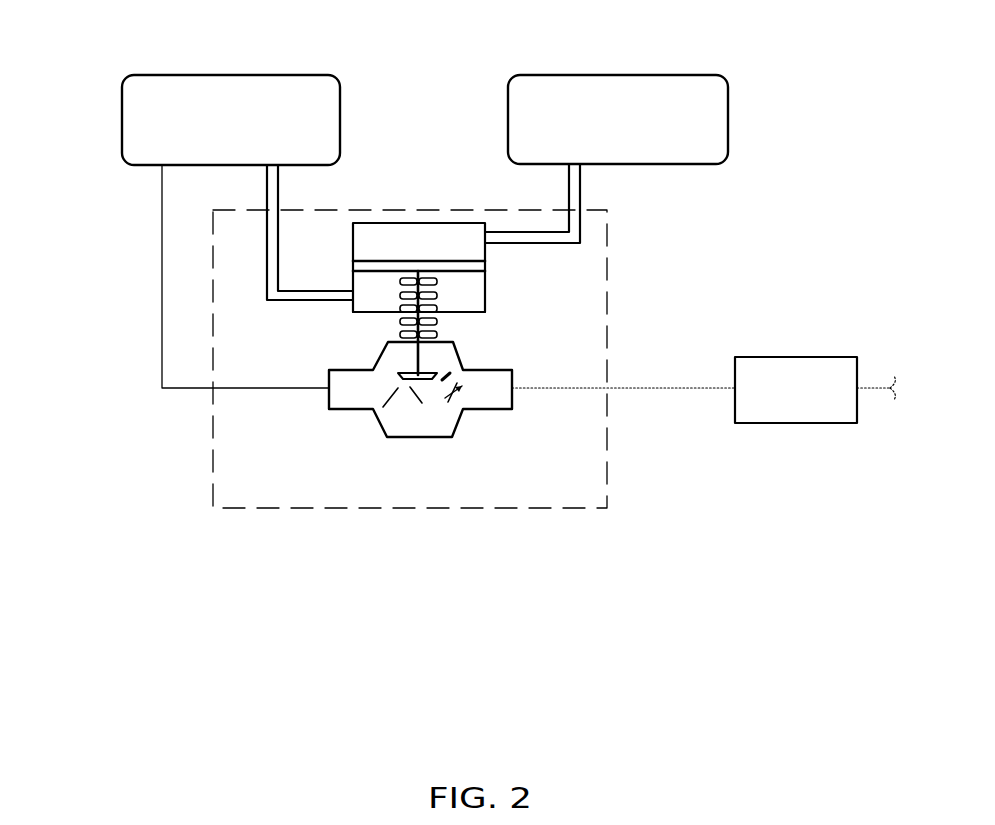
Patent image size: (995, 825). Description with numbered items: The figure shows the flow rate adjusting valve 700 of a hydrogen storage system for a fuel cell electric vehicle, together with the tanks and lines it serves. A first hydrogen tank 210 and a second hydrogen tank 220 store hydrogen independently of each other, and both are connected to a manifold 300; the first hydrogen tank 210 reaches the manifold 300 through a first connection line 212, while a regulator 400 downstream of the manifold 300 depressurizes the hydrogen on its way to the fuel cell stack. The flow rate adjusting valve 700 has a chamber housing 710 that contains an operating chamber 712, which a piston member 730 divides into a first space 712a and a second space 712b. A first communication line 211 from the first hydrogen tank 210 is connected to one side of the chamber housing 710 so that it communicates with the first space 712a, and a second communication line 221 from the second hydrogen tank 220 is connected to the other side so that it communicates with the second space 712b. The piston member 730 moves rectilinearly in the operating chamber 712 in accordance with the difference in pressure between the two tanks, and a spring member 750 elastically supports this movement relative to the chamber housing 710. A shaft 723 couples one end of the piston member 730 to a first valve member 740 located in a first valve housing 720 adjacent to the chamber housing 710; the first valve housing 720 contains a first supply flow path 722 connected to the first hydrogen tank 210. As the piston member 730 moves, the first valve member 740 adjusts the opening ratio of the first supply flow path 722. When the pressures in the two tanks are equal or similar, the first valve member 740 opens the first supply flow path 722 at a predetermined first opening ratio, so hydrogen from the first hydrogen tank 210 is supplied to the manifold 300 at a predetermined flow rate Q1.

The first hydrogen tank 210 is at (227, 74).
The second hydrogen tank 220 is at (612, 74).
The first communication line 211 is at (283, 185).
The second communication line 221 is at (584, 185).
The first connection line 212 is at (181, 393).
The manifold 300 is at (619, 470).
The regulator 400 is at (792, 356).
The flow rate adjusting valve 700 is at (349, 299).
The chamber housing 710 is at (252, 234).
The operating chamber 712 is at (252, 285).
The first space 712a is at (366, 298).
The second space 712b is at (366, 240).
The first valve housing 720 is at (466, 418).
The first supply flow path 722 is at (455, 368).
The shaft 723 is at (414, 316).
The piston member 730 is at (419, 270).
The first valve member 740 is at (398, 384).
The spring member 750 is at (445, 326).
The predetermined flow rate Q1 is at (434, 405).